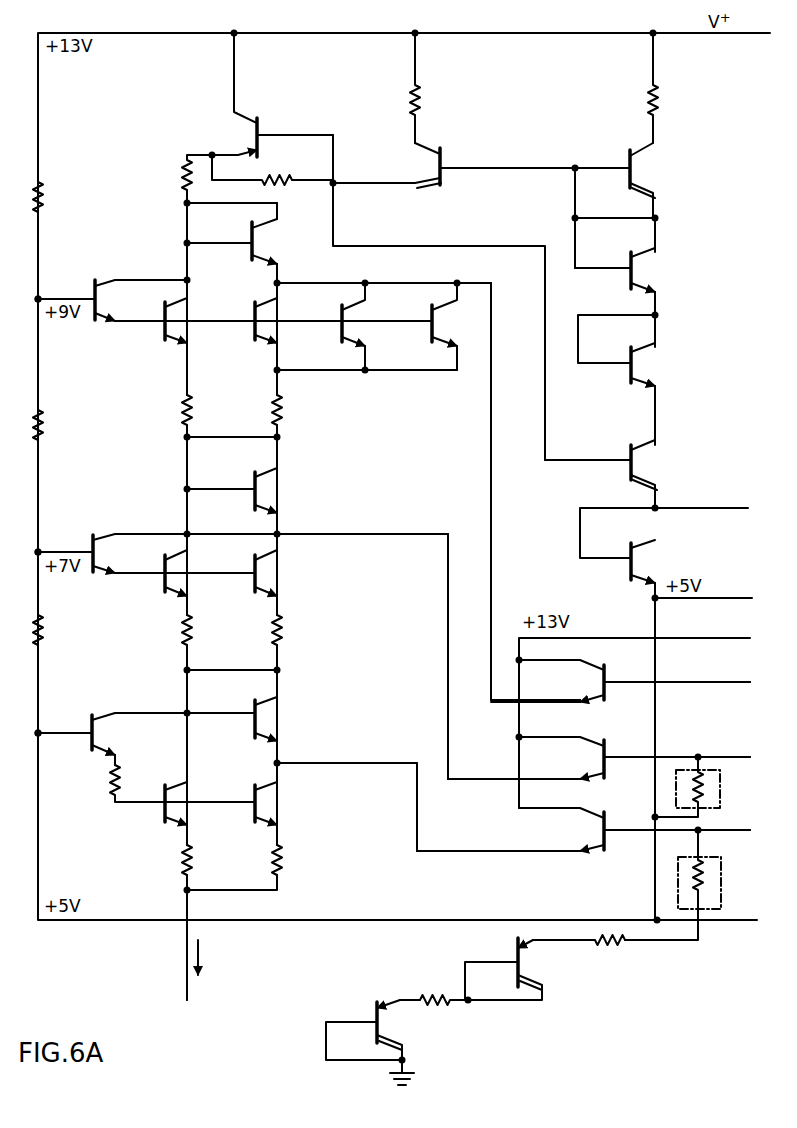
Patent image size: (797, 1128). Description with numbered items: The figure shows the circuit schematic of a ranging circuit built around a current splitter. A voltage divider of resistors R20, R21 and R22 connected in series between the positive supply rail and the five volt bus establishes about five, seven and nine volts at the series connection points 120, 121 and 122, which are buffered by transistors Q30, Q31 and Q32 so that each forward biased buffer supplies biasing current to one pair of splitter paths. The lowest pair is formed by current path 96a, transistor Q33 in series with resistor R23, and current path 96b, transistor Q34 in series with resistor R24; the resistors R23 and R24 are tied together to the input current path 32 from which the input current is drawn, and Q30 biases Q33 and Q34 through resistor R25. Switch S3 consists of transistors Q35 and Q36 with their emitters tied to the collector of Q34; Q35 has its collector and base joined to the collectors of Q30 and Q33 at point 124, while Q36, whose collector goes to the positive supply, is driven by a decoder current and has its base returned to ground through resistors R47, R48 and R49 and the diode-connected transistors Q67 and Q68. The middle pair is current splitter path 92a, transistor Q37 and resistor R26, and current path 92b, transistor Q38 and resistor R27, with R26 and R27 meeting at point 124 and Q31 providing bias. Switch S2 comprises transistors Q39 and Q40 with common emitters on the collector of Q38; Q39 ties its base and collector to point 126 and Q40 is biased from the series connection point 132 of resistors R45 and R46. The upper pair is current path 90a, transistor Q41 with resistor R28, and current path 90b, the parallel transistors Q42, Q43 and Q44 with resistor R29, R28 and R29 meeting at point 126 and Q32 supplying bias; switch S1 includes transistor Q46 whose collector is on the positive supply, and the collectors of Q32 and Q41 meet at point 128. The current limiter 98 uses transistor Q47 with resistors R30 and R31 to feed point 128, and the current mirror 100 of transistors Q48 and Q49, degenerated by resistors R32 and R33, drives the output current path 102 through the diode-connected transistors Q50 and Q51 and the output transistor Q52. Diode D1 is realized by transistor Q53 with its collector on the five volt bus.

The input current path 32 is at (185, 950).
The current limiter 98 is at (234, 119).
The current mirror 100 is at (495, 125).
The output current path 102 is at (622, 367).
The connection point 128 is at (235, 281).
The connection point 126 is at (146, 519).
The connection point 124 is at (112, 713).
The series connection point 120 is at (38, 733).
The series connection point 121 is at (38, 552).
The series connection point 122 is at (38, 299).
The current path 90a is at (171, 352).
The current path 90b is at (332, 353).
The current splitter path 92a is at (174, 591).
The current path 92b is at (259, 542).
The current path 96a is at (140, 794).
The current path 96b is at (244, 774).
The series connection point 132 is at (679, 832).
The diode D1 is at (609, 553).
The switch S1 is at (523, 500).
The switch S2 is at (502, 665).
The switch S3 is at (481, 816).
The transistor Q30 is at (92, 706).
The transistor Q31 is at (100, 535).
The transistor Q32 is at (112, 280).
The transistor Q33 is at (175, 782).
The transistor Q34 is at (263, 782).
The transistor Q35 is at (258, 700).
The transistor Q36 is at (596, 816).
The transistor Q37 is at (170, 593).
The transistor Q38 is at (262, 552).
The transistor Q39 is at (264, 467).
The transistor Q40 is at (596, 744).
The transistor Q41 is at (172, 347).
The transistor Q42 is at (258, 306).
The transistor Q43 is at (350, 304).
The transistor Q44 is at (438, 304).
The resistor R45 is at (263, 228).
The transistor Q46 is at (606, 654).
The transistor Q47 is at (248, 113).
The transistor Q48 is at (432, 142).
The transistor Q49 is at (642, 142).
The transistor Q50 is at (630, 252).
The transistor Q51 is at (630, 348).
The transistor Q52 is at (630, 440).
The transistor Q53 is at (630, 542).
The transistor Q67 is at (516, 943).
The transistor Q68 is at (376, 1000).
The resistor R20 is at (44, 625).
The resistor R21 is at (44, 428).
The resistor R22 is at (44, 200).
The resistor R23 is at (180, 860).
The resistor R24 is at (270, 858).
The resistor R25 is at (106, 784).
The resistor R26 is at (192, 625).
The resistor R27 is at (285, 625).
The resistor R28 is at (180, 410).
The resistor R29 is at (270, 410).
The resistor R30 is at (181, 187).
The resistor R31 is at (282, 186).
The resistor R32 is at (412, 95).
The resistor R33 is at (650, 95).
The resistor R46 is at (690, 768).
The resistor R47 is at (678, 870).
The resistor R48 is at (608, 950).
The resistor R49 is at (434, 998).